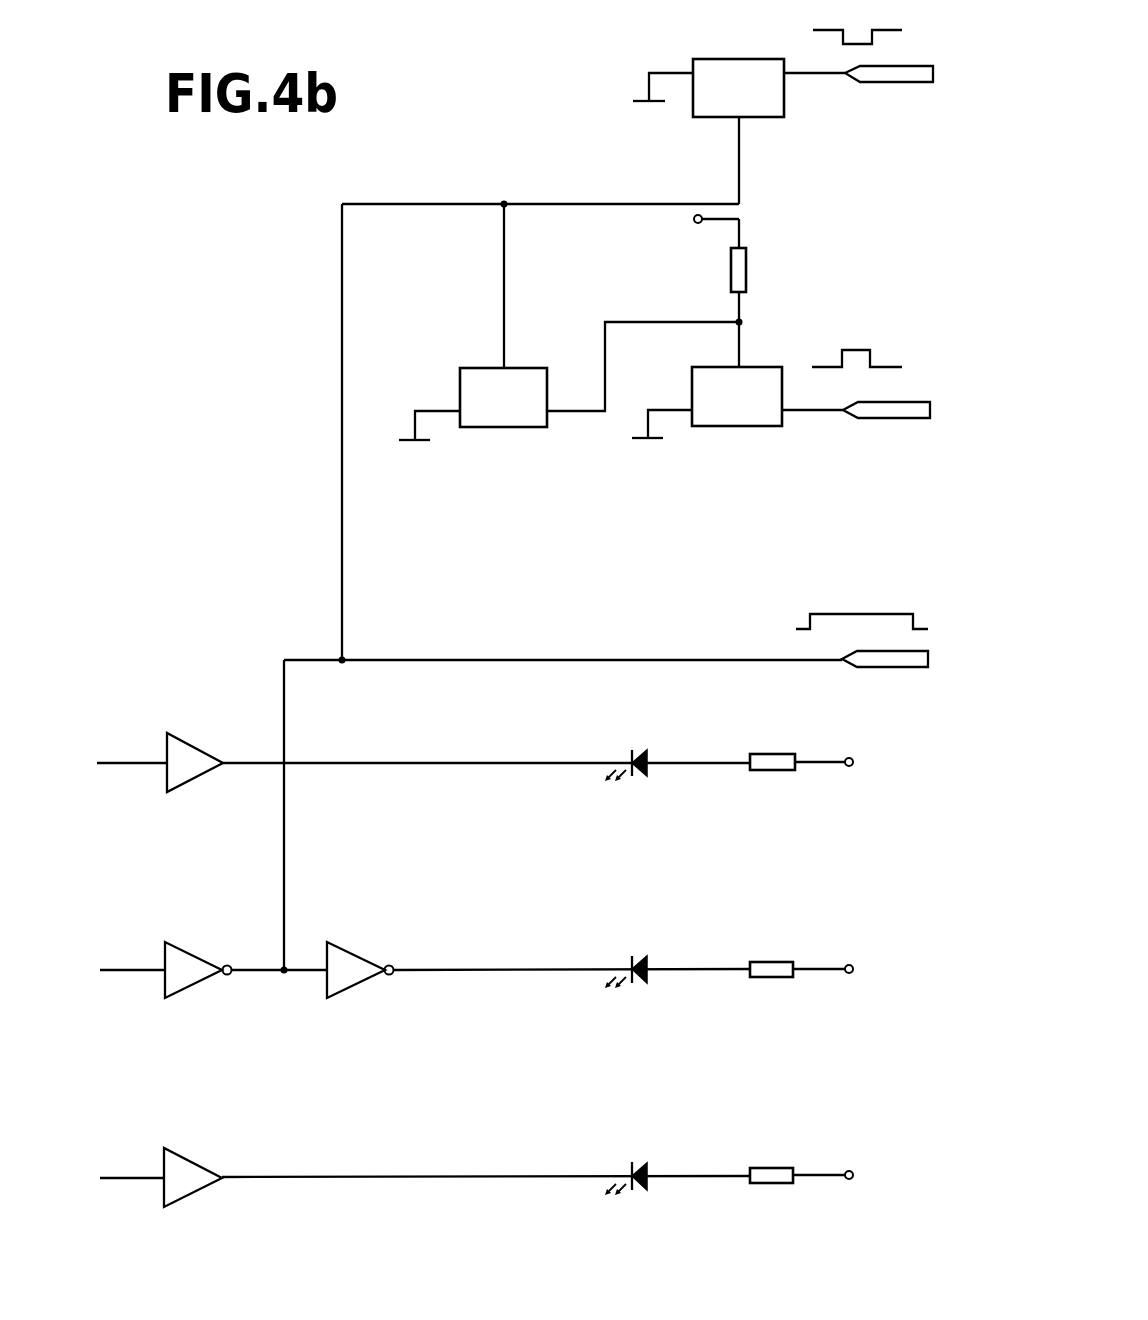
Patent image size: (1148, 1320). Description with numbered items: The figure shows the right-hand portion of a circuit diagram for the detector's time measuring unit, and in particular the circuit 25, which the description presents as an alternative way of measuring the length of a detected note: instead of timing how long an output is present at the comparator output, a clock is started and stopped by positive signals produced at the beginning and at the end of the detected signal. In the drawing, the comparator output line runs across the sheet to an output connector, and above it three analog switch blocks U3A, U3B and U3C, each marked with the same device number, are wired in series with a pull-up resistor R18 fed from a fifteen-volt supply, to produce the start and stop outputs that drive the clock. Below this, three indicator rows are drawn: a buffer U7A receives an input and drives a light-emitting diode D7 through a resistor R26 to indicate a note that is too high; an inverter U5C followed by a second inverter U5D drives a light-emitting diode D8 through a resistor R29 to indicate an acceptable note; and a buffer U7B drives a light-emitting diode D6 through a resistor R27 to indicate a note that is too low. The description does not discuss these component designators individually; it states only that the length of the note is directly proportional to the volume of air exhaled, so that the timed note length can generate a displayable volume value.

The circuit 25 is at (886, 228).
The analog switch 4066 U3A is at (739, 111).
The analog switch 4066 U3B is at (569, 399).
The analog switch 4066 U3C is at (737, 407).
The resistor 100k R18 is at (729, 288).
The buffer 4050 U7A is at (170, 764).
The inverter 4049 U5C is at (174, 972).
The inverter 4049 U5D is at (359, 972).
The buffer 4050 U7B is at (169, 1183).
The LED too high D7 is at (626, 764).
The LED ok D8 is at (626, 970).
The LED too low D6 is at (626, 1177).
The resistor 1k5 R26 is at (820, 765).
The resistor 1k5 R29 is at (821, 971).
The resistor 1k5 R27 is at (821, 1178).